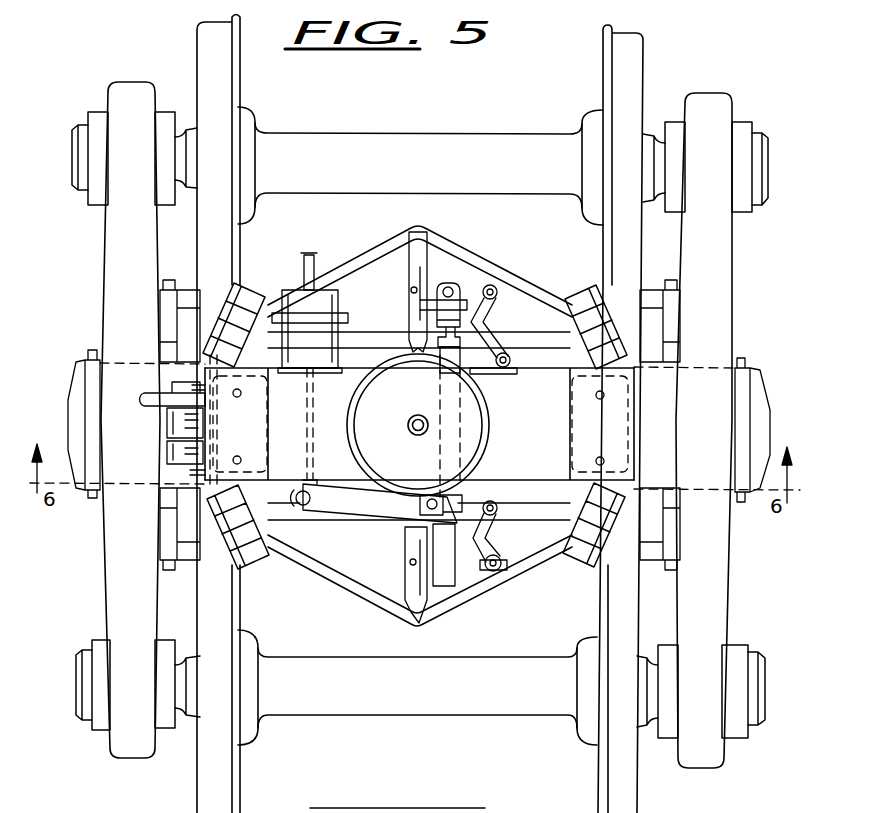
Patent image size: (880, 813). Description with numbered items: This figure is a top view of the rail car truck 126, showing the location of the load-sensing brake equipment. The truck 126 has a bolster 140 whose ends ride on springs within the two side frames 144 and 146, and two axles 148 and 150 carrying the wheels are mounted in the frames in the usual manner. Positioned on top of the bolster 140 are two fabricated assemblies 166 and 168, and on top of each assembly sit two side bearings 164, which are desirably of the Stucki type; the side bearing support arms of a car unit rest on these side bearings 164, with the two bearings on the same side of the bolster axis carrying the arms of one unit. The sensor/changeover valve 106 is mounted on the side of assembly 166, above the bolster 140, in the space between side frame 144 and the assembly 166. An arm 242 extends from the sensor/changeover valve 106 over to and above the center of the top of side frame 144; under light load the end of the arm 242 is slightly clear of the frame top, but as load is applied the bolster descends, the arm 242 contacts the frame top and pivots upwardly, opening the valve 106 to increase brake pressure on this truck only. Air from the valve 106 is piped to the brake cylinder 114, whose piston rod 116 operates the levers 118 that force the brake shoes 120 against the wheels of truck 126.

The sensor/changeover valve 106 is at (169, 452).
The brake cylinder 114 is at (301, 290).
The piston rod 116 is at (294, 504).
The levers 118 is at (453, 268).
The brake shoes 120 is at (210, 294).
The truck 126 is at (443, 122).
The bolster 140 is at (536, 473).
The side frame 144 is at (106, 241).
The side frame 146 is at (729, 260).
The axle 148 is at (317, 158).
The axle 150 is at (357, 703).
The side bearings 164 is at (248, 300).
The fabricated assembly 166 is at (254, 434).
The fabricated assembly 168 is at (577, 422).
The arm 242 is at (155, 393).